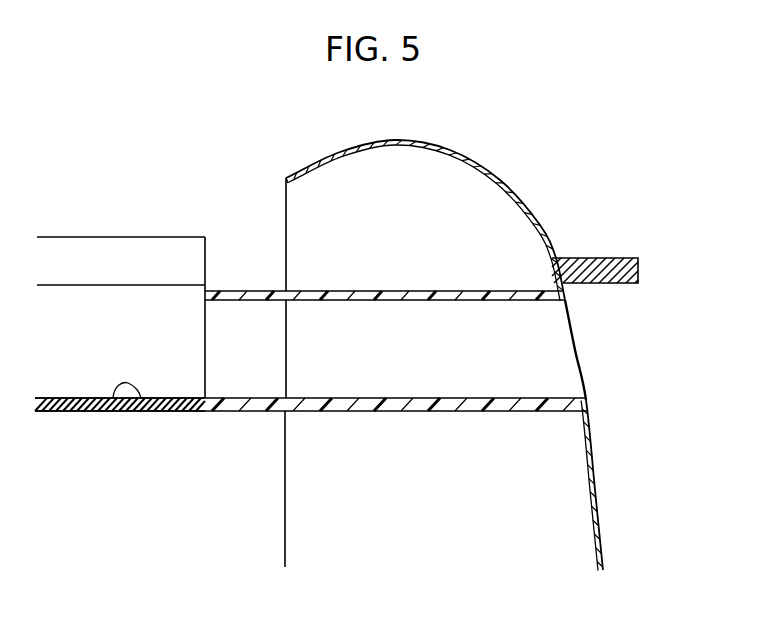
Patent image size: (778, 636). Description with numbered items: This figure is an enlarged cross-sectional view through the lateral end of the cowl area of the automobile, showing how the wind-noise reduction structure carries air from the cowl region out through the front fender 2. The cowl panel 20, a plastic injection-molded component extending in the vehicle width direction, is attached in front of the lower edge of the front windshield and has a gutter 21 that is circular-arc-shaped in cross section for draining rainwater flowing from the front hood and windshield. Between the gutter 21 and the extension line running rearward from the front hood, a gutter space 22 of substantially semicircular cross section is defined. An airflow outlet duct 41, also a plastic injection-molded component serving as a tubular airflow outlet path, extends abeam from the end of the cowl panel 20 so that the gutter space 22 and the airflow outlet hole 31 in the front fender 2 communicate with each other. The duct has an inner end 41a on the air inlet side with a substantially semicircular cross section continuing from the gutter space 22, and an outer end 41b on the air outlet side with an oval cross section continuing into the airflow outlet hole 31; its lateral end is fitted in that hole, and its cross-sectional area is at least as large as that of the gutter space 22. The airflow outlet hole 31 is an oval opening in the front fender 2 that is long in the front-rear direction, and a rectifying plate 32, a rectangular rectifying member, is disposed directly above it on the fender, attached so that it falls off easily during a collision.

The front fender 2 is at (500, 178).
The cowl panel 20 is at (66, 410).
The gutter 21 is at (113, 398).
The gutter space 22 is at (115, 335).
The airflow outlet hole 31 is at (594, 400).
The rectifying plate 32 is at (626, 258).
The airflow outlet duct 41 is at (423, 411).
The inner end 41a is at (205, 336).
The outer end 41b is at (580, 345).